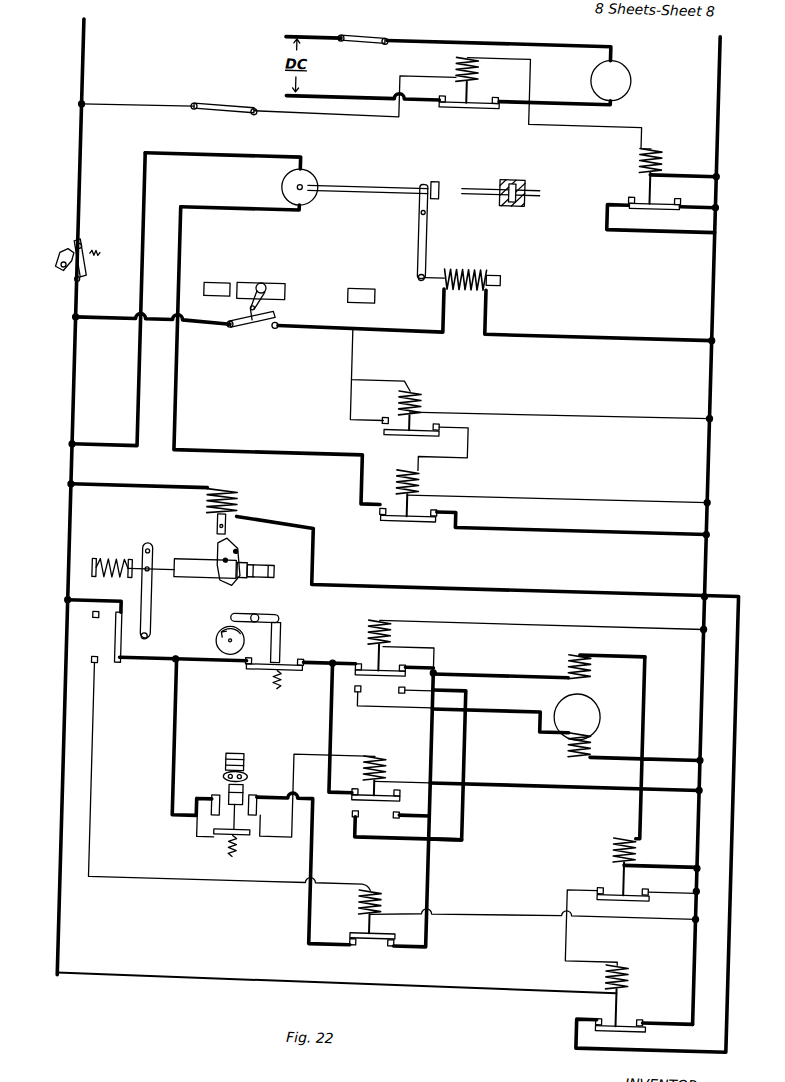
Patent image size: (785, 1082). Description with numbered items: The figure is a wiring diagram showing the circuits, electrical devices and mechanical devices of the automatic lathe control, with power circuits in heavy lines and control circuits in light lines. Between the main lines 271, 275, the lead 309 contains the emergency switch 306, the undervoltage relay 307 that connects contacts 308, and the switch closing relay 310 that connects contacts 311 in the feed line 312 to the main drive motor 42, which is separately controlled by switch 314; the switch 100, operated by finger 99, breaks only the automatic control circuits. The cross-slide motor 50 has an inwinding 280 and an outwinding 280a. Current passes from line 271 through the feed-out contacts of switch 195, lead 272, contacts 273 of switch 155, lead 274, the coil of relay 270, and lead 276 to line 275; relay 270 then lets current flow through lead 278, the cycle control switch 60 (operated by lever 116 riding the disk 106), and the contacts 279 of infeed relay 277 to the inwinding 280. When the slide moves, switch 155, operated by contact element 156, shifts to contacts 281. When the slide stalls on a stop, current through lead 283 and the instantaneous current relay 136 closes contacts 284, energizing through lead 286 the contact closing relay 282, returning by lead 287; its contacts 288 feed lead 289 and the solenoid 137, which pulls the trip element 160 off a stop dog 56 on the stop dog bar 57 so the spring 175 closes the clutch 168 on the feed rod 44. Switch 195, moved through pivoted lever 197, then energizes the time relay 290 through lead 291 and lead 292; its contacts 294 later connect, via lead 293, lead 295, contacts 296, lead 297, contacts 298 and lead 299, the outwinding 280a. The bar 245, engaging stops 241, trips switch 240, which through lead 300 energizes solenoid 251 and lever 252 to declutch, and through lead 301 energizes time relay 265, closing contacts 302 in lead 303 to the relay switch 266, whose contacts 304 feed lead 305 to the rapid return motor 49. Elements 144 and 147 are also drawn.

The electric motor 42 is at (618, 76).
The feed rod 44 is at (370, 187).
The rapid return motor 49 is at (303, 178).
The electric motor 50 is at (592, 694).
The stop dogs 56 is at (246, 583).
The stop dog bar 57 is at (276, 576).
The cycle control switch 60 is at (300, 674).
The switch-operating finger 99 is at (48, 271).
The electrical switch 100 is at (80, 276).
The disk 106 is at (222, 652).
The switch actuating lever 116 is at (276, 618).
The instantaneous current relay 136 is at (622, 841).
The carriage feed control solenoid 137 is at (215, 527).
The armature 144 is at (256, 777).
The solenoid 147 is at (240, 758).
The switch 155 is at (236, 842).
The contact element 156 is at (252, 795).
The contact or trip element 160 is at (242, 551).
The clutch 168 is at (508, 177).
The spring 175 is at (112, 567).
The two-position switch 195 is at (126, 660).
The pivoted lever 197 is at (153, 600).
The switch 240 is at (252, 330).
The adjustable stops 241 is at (208, 288).
The switch shifting bar 245 is at (268, 288).
The solenoid 251 is at (490, 290).
The lever 252 is at (419, 240).
The time relay 265 is at (417, 394).
The circuit closing solenoid 266 is at (417, 483).
The relay 270 is at (374, 760).
The main line 271 is at (69, 540).
The lead 272 is at (178, 748).
The contacts 273 is at (208, 842).
The lead 274 is at (306, 751).
The main line 275 is at (707, 556).
The lead 276 is at (524, 777).
The infeed relay 277 is at (378, 621).
The lead 278 is at (221, 668).
The contacts 279 is at (360, 665).
The inwinding 280 is at (572, 658).
The outwinding 280a is at (574, 754).
The contacts 281 is at (220, 799).
The contact closing relay 282 is at (641, 966).
The lead 283 is at (649, 726).
The contacts 284 is at (604, 882).
The lead 286 is at (578, 937).
The lead 287 is at (456, 986).
The contacts 288 is at (654, 1013).
The lead 289 is at (520, 587).
The time relay 290 is at (380, 890).
The lead 291 is at (99, 815).
The lead 292 is at (503, 912).
The lead 293 is at (320, 834).
The contacts 294 is at (388, 946).
The lead 295 is at (439, 848).
The contacts 296 is at (407, 825).
The lead 297 is at (466, 729).
The contacts 298 is at (393, 697).
The lead 299 is at (498, 708).
The lead 300 is at (106, 325).
The lead 301 is at (380, 324).
The contacts 302 is at (381, 417).
The lead 303 is at (347, 382).
The contacts 304 is at (380, 521).
The lead 305 is at (170, 399).
The emergency switch 306 is at (212, 109).
The undervoltage relay 307 is at (648, 146).
The contacts 308 is at (618, 195).
The lead 309 is at (338, 118).
The switch closing relay 310 is at (458, 84).
The contacts 311 is at (436, 108).
The feed line 312 is at (556, 99).
The switch 314 is at (347, 45).